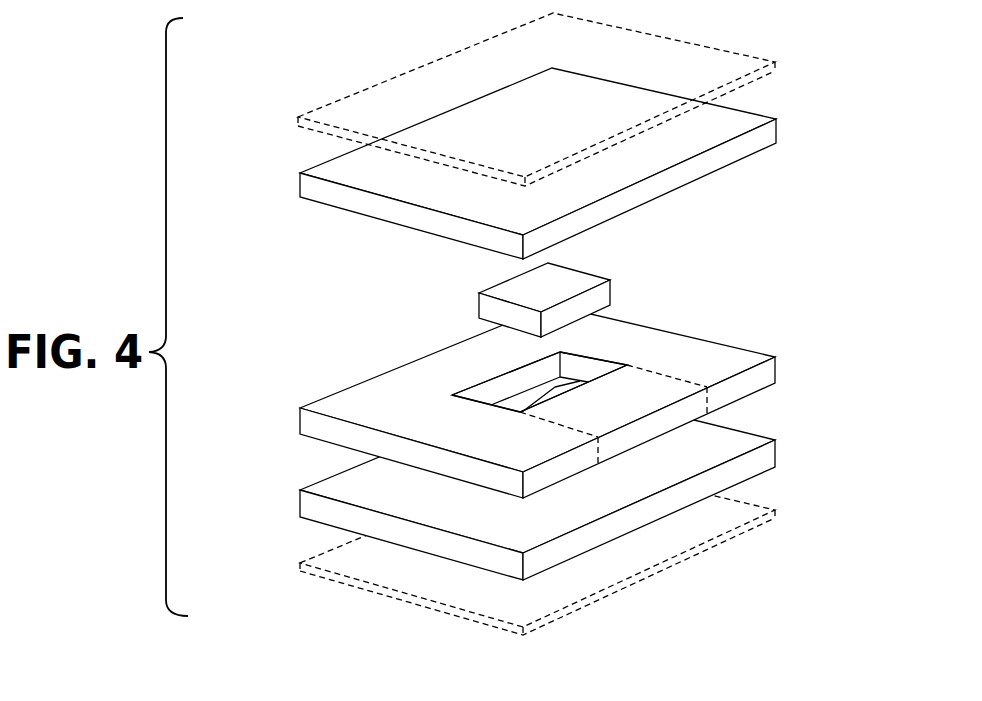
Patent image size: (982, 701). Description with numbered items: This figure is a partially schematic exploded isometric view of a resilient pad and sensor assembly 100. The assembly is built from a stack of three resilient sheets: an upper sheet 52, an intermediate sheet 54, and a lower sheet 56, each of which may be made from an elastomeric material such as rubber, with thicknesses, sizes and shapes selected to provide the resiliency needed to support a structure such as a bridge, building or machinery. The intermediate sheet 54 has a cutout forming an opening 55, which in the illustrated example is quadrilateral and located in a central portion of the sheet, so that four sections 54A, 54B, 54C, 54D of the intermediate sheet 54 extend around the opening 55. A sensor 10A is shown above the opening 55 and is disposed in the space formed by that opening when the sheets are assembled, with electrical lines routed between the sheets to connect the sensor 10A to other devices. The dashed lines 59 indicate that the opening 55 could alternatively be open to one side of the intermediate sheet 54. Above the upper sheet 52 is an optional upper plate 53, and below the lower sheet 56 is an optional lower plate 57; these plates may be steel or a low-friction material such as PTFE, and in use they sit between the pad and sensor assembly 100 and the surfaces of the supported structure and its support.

The resilient pad and sensor assembly 100 is at (562, 324).
The sensor 10A is at (497, 287).
The upper sheet 52 is at (298, 177).
The upper plate 53 is at (310, 123).
The intermediate sheet 54 is at (298, 416).
The first section of intermediate sheet 54A is at (457, 418).
The second section of intermediate sheet 54B is at (620, 392).
The third section of intermediate sheet 54C is at (600, 357).
The fourth section of intermediate sheet 54D is at (443, 377).
The opening 55 is at (492, 392).
The lower sheet 56 is at (298, 503).
The lower plate 57 is at (300, 563).
The dashed lines 59 is at (632, 367).